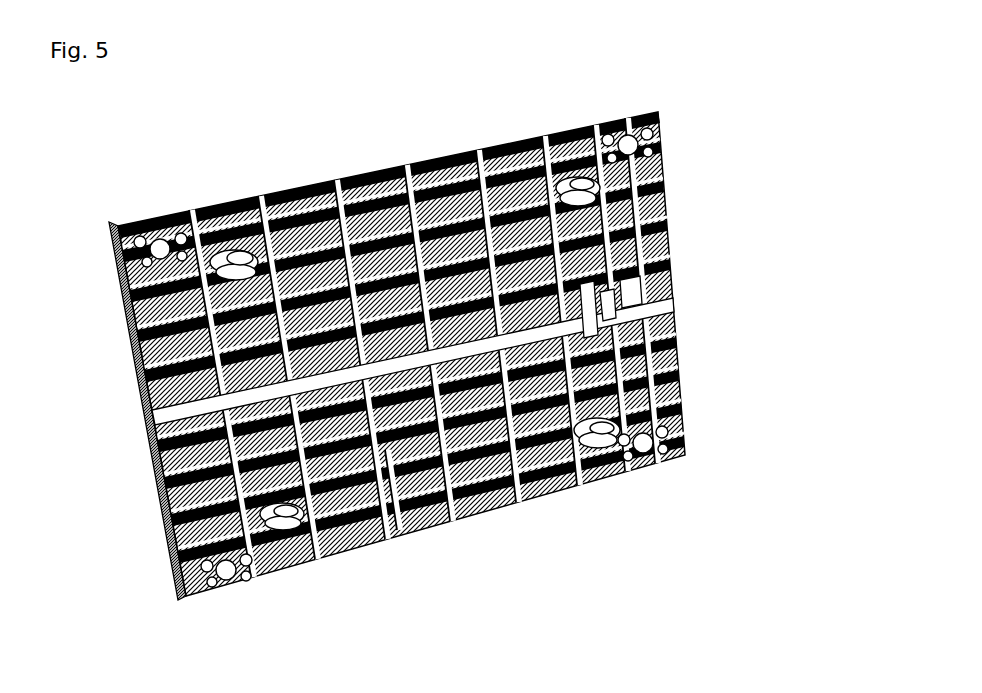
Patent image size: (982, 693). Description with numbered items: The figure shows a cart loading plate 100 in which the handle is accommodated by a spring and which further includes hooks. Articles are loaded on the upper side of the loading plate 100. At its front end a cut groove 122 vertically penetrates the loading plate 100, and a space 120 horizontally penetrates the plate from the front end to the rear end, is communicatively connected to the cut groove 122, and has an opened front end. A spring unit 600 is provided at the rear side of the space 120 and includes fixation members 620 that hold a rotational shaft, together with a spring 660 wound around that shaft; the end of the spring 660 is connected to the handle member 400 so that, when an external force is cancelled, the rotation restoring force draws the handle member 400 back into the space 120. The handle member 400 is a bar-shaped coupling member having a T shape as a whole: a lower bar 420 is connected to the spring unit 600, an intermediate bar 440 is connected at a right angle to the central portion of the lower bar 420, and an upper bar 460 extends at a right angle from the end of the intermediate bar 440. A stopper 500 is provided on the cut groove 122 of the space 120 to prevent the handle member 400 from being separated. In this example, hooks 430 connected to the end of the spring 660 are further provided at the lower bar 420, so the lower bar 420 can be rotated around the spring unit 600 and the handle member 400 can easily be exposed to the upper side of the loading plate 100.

The loading plate 100 is at (401, 343).
The space 120 is at (448, 255).
The cut groove 122 is at (143, 408).
The handle member 400 is at (410, 541).
The lower bar 420 is at (572, 420).
The hooks 430 is at (595, 497).
The intermediate bar 440 is at (410, 465).
The upper bar 460 is at (243, 563).
The stopper 500 is at (160, 396).
The spring unit 600 is at (705, 330).
The fixation members 620 is at (632, 298).
The spring 660 is at (613, 303).